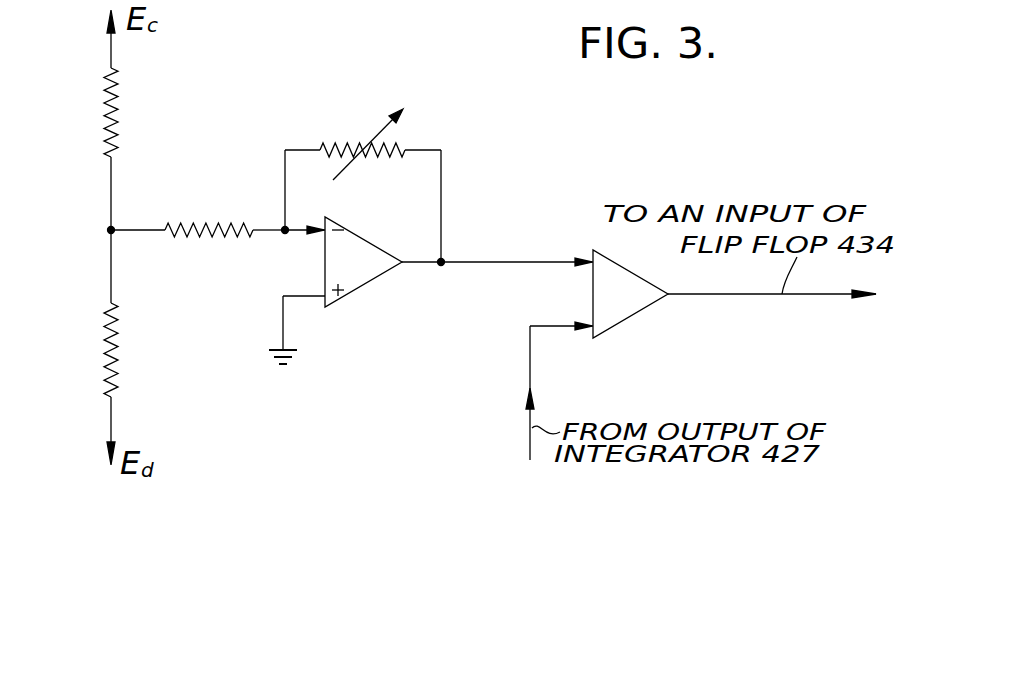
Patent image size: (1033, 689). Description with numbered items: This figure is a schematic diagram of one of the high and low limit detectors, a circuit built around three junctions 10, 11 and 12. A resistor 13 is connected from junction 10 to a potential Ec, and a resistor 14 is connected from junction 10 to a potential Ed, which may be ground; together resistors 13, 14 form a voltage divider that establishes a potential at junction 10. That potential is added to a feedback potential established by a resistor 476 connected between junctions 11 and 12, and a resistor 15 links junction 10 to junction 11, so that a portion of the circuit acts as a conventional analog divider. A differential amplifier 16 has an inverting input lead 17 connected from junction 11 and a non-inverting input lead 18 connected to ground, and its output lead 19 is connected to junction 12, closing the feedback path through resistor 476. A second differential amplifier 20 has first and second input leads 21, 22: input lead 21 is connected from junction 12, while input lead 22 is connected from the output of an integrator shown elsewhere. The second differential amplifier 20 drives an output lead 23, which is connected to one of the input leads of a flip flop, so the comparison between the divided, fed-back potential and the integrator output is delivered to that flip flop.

The junction 10 is at (110, 230).
The junction 11 is at (284, 235).
The junction 12 is at (441, 267).
The resistor 13 is at (118, 112).
The resistor 14 is at (118, 352).
The resistor 15 is at (199, 197).
The differential amplifier 16 is at (362, 290).
The inverting input lead 17 is at (328, 199).
The non-inverting input lead 18 is at (300, 296).
The output lead 19 is at (412, 260).
The second differential amplifier 20 is at (646, 324).
The first input lead 21 is at (522, 234).
The second input lead 22 is at (545, 326).
The output lead 23 is at (752, 294).
The resistor 476 is at (345, 143).